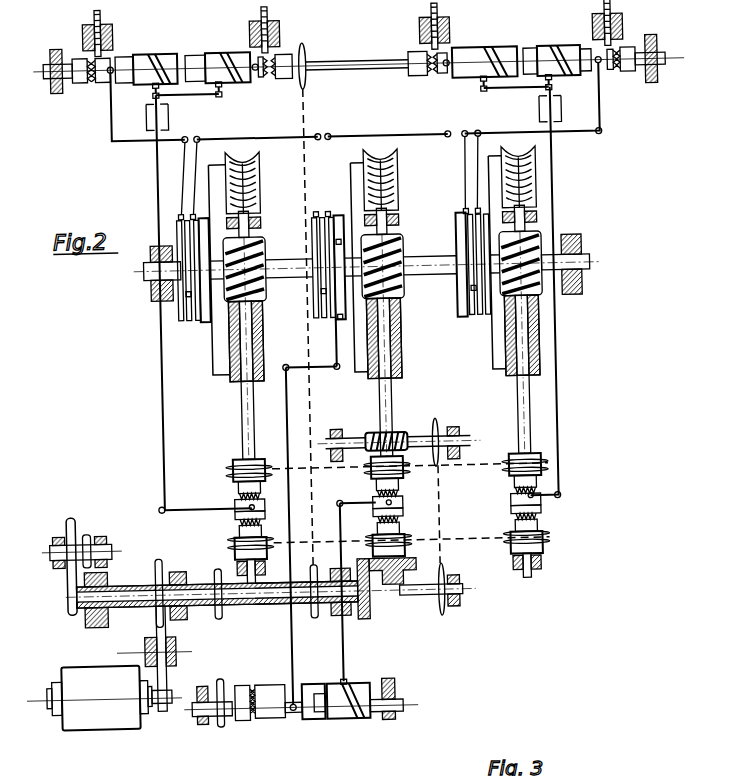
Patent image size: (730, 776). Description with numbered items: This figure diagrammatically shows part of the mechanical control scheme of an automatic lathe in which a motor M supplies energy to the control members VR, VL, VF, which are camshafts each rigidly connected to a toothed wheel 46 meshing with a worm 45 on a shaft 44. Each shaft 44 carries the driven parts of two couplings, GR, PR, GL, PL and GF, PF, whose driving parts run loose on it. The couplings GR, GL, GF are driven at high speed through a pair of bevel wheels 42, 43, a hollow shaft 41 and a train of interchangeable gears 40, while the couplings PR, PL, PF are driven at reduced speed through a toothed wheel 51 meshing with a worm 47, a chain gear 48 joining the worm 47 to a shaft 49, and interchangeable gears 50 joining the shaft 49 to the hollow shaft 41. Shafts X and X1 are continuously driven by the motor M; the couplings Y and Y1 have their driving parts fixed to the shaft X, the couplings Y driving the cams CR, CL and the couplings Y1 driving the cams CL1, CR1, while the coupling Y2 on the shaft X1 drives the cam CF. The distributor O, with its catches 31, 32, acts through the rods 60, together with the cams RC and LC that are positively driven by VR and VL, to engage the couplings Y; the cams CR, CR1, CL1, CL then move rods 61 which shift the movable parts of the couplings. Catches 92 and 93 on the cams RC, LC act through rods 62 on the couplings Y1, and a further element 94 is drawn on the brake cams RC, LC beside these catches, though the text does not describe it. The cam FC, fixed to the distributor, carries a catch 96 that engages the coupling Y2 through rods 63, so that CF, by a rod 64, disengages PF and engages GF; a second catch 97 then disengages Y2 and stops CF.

The system of rods 60 is at (204, 137).
The system of rods 62 is at (116, 140).
The rods 61 is at (159, 360).
The rod 64 is at (338, 656).
The brake plate 94 is at (184, 210).
The catch 92 is at (195, 214).
The catch 93 is at (187, 292).
The catch 96 is at (343, 318).
The second catch 97 is at (340, 212).
The catch 31 is at (318, 216).
The catch 32 is at (331, 212).
The toothed wheel 46 is at (259, 176).
The worm 45 is at (267, 250).
The shaft 44 is at (240, 397).
The system of rods 63 is at (270, 420).
The worm 47 is at (372, 434).
The toothed wheel 51 is at (430, 438).
The chain gear 48 is at (444, 552).
The train of interchangeable gears 50 is at (60, 576).
The hollow shaft 41 is at (240, 604).
The bevel wheel 42 is at (362, 616).
The bevel wheel 43 is at (408, 563).
The shaft 49 is at (420, 598).
The train of interchangeable gears 40 is at (168, 660).
The motor M is at (104, 698).
The shaft X is at (350, 72).
The shaft X1 is at (190, 714).
The coupling Y is at (288, 80).
The coupling Y1 is at (104, 80).
The coupling Y2 is at (262, 720).
The cam CL is at (222, 52).
The cam CL1 is at (148, 52).
The cam CR is at (498, 52).
The cam CR1 is at (560, 52).
The cam CF is at (340, 720).
The cam LC is at (197, 322).
The cam FC is at (340, 322).
The cam RC is at (466, 322).
The control member VL is at (214, 372).
The control member VF is at (354, 372).
The control member VR is at (493, 372).
The coupling PL is at (228, 470).
The coupling PF is at (400, 488).
The coupling PR is at (506, 486).
The coupling GL is at (230, 522).
The coupling GF is at (400, 520).
The coupling GR is at (506, 524).
The distributor O is at (307, 318).